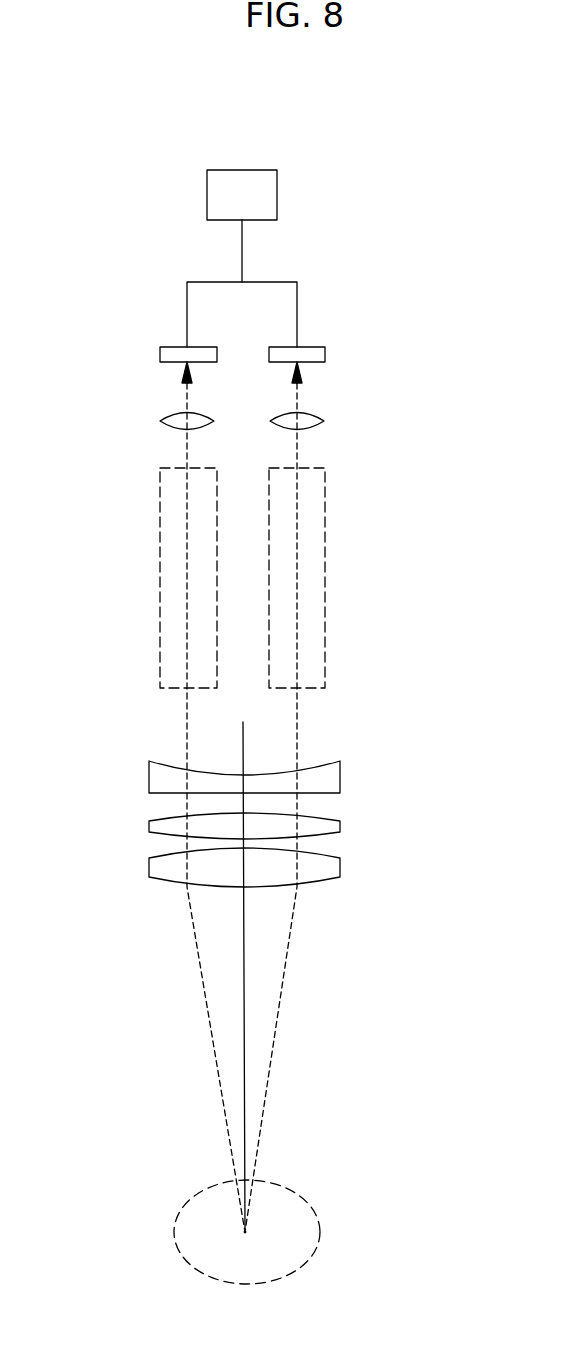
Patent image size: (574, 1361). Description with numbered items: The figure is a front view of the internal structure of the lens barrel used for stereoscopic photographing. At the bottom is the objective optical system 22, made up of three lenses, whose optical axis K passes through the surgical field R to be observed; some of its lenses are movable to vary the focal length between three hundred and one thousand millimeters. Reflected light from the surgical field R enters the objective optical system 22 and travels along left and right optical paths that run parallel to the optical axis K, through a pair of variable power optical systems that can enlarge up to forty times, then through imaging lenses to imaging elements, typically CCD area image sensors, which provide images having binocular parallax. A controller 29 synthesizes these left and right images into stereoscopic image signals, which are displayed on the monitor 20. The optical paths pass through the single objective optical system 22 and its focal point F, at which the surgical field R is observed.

The panel monitor 20 is at (242, 170).
The objective optical system 22 is at (128, 768).
The controller 29 is at (242, 226).
The optical axis K is at (245, 959).
The surgical field R is at (196, 1195).
The focal point F is at (245, 1232).